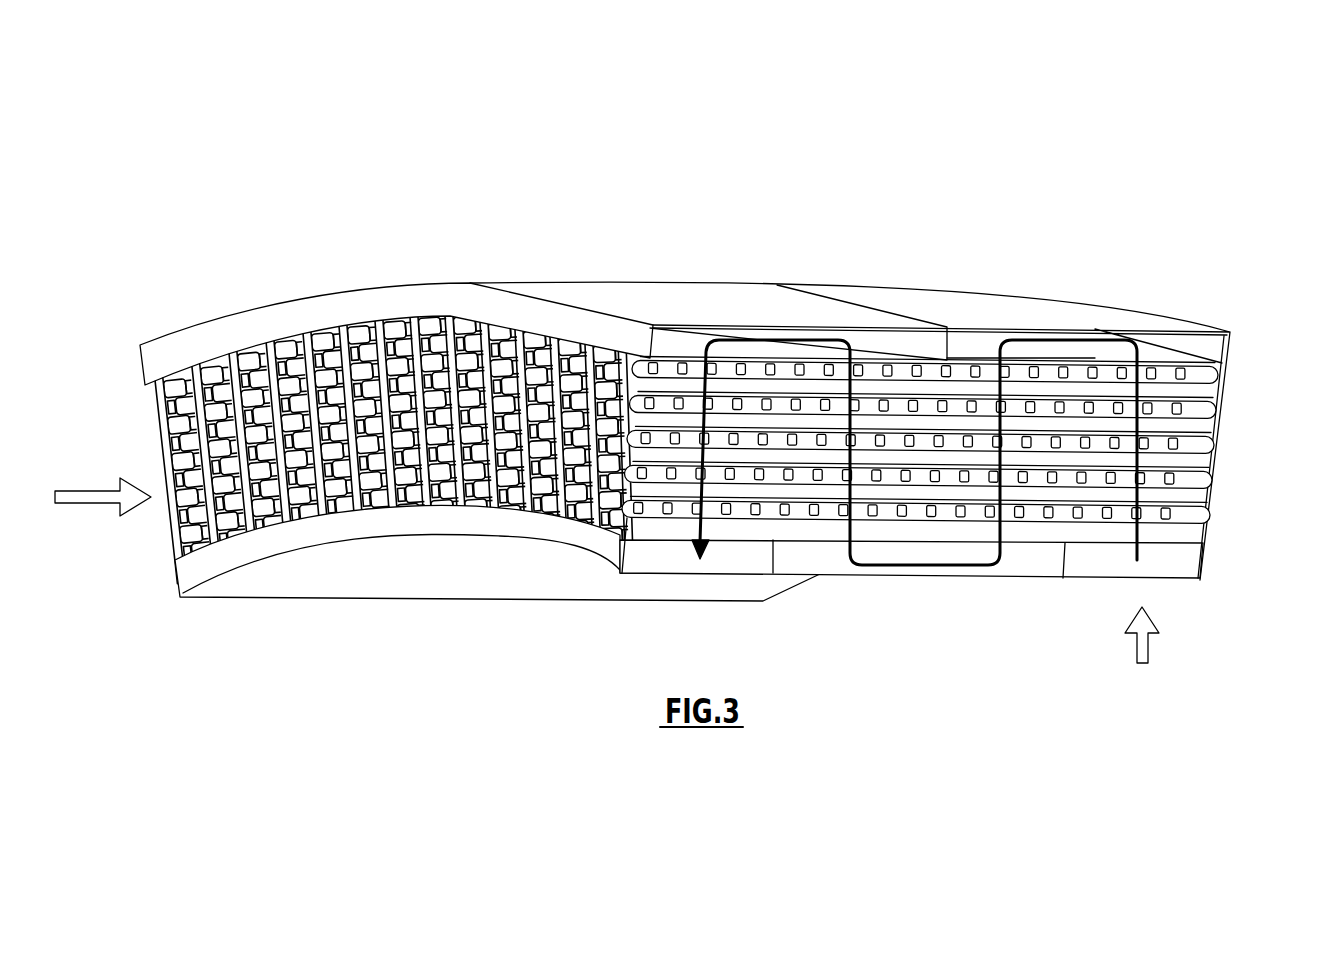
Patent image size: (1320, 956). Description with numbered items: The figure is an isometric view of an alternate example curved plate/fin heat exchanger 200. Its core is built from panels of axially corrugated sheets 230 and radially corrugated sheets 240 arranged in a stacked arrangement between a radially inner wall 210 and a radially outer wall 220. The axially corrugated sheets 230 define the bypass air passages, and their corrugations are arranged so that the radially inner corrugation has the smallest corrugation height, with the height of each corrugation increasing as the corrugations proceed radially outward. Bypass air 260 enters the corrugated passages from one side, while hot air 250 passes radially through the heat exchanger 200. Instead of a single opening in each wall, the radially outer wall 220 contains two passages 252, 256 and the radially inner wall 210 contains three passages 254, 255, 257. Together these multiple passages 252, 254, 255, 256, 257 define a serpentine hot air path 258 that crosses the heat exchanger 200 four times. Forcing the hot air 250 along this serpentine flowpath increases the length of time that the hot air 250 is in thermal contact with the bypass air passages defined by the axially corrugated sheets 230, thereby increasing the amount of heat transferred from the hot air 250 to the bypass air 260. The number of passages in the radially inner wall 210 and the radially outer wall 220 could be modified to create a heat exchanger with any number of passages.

The heat exchanger 200 is at (246, 118).
The radially inner wall 210 is at (567, 583).
The radially outer wall 220 is at (404, 284).
The axially corrugated sheet 230 is at (1210, 393).
The radially corrugated sheet 240 is at (633, 362).
The hot air 250 is at (1148, 648).
The passage 252 is at (1213, 347).
The passage 254 is at (957, 572).
The passage 255 is at (1193, 562).
The passage 256 is at (886, 347).
The passage 257 is at (727, 562).
The serpentine hot air path 258 is at (1067, 342).
The bypass air 260 is at (88, 491).